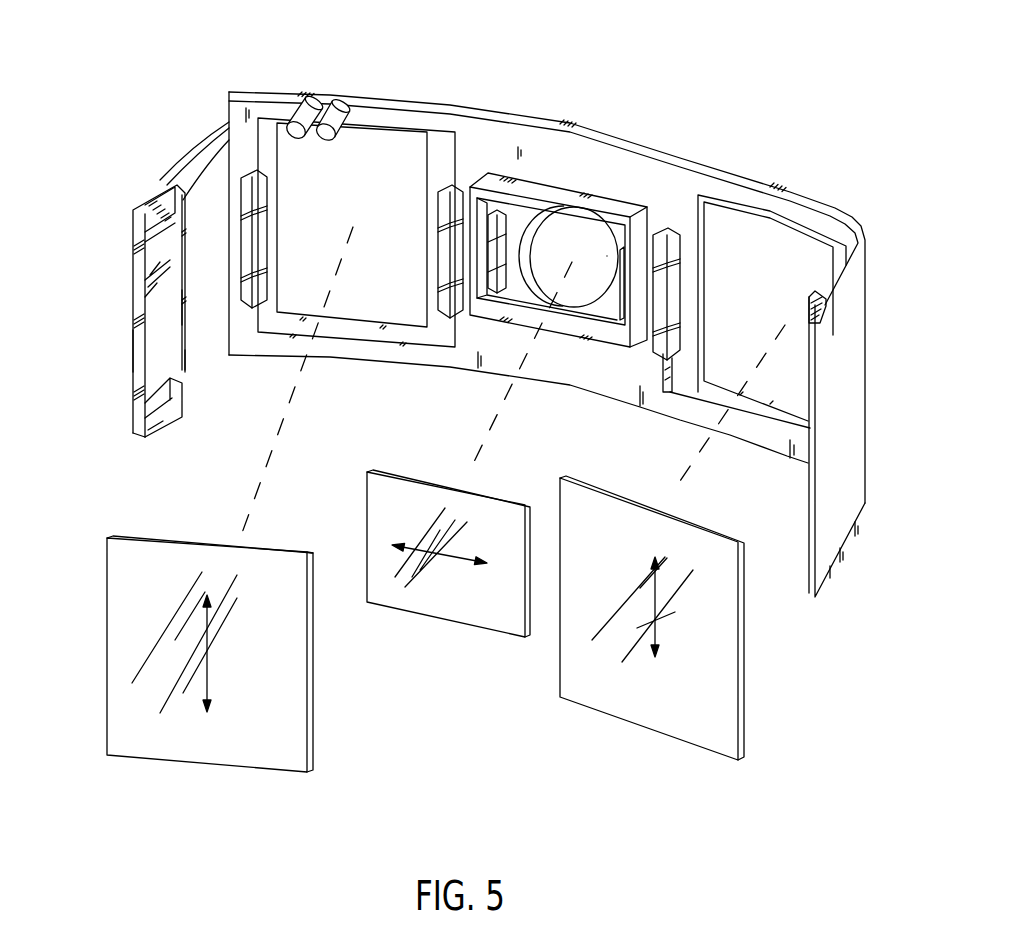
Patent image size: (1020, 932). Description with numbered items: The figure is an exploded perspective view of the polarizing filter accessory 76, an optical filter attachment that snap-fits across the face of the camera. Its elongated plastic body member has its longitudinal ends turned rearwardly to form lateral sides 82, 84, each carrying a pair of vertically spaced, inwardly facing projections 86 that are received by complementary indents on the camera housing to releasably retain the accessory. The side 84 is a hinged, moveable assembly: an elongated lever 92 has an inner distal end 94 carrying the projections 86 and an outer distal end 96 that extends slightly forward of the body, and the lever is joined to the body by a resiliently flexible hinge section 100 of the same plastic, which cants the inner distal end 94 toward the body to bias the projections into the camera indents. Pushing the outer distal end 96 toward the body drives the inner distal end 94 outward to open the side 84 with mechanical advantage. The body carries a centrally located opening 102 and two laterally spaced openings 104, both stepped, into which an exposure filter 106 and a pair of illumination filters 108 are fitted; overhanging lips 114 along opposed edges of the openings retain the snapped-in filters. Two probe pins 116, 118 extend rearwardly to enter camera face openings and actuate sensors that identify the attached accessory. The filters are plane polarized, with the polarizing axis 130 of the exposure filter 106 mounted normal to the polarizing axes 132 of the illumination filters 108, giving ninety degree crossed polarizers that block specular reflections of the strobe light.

The polarizing filter accessory 76 is at (795, 152).
The lateral side 82 is at (862, 547).
The lateral side 84 is at (117, 270).
The projections 86 is at (160, 215).
The lever 92 is at (186, 370).
The inner distal end 94 is at (133, 350).
The outer distal end 96 is at (203, 140).
The hinge section 100 is at (181, 308).
The centrally located opening 102 is at (617, 235).
The laterally spaced openings 104 is at (437, 147).
The exposure filter 106 is at (497, 610).
The illumination filters 108 is at (252, 740).
The lips 114 is at (260, 190).
The probe pin 116 is at (315, 100).
The probe pin 118 is at (342, 110).
The polarizing axis 130 is at (432, 567).
The polarizing axes 132 is at (207, 655).